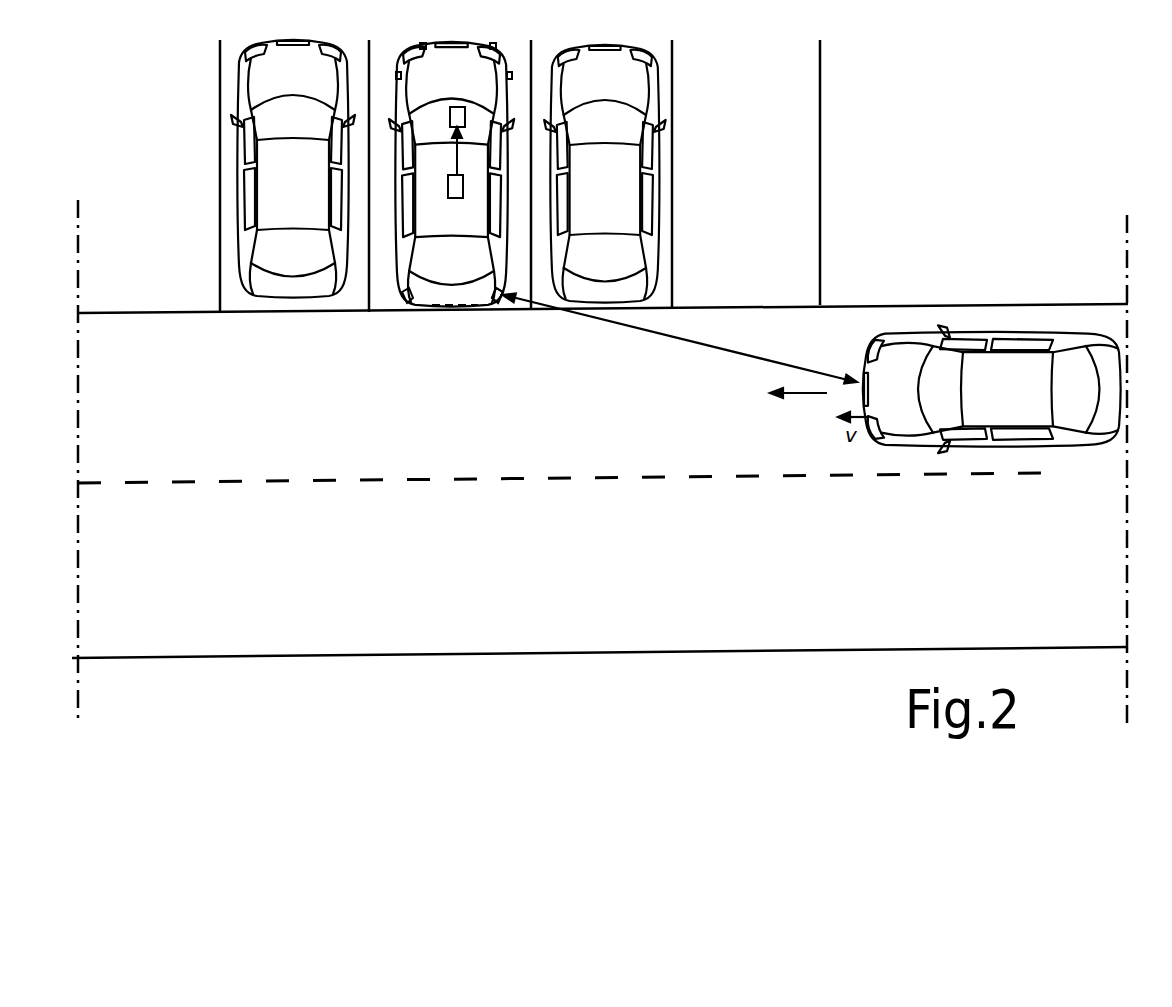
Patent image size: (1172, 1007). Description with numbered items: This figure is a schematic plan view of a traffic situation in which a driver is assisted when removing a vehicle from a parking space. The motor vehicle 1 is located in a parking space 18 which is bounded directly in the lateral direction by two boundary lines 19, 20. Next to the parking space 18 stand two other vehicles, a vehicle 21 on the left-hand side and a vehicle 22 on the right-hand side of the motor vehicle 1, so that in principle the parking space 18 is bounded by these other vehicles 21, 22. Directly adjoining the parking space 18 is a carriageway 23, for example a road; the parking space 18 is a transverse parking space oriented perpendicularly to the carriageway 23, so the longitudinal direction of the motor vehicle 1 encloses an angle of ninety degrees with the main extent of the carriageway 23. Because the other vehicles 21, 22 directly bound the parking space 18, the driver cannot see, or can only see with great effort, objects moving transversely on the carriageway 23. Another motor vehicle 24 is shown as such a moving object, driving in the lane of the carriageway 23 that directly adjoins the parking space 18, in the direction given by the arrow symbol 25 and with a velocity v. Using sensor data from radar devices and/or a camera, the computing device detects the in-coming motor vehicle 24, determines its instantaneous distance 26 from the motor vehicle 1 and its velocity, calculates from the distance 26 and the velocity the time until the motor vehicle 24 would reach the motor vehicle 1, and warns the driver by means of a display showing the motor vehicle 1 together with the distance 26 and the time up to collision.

The motor vehicle 1 is at (450, 296).
The parking space 18 is at (498, 303).
The boundary line 19 is at (368, 300).
The boundary line 20 is at (542, 307).
The vehicle 21 is at (290, 296).
The vehicle 22 is at (602, 292).
The carriageway 23 is at (468, 457).
The motor vehicle 24 is at (997, 413).
The arrow symbol 25 is at (798, 395).
The distance 26 is at (686, 343).